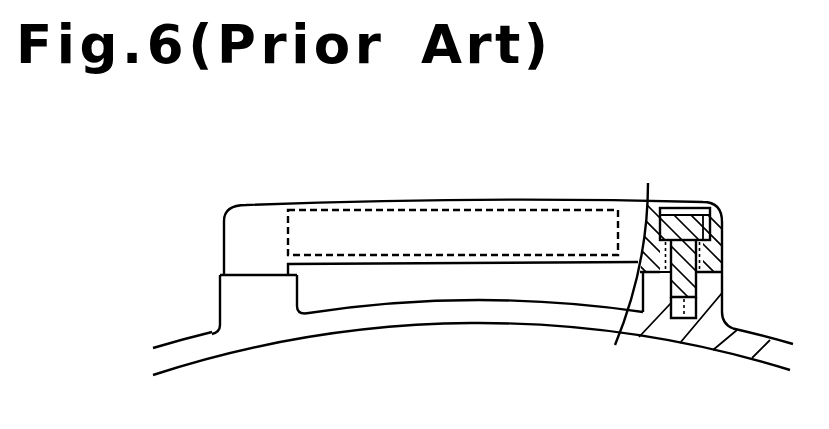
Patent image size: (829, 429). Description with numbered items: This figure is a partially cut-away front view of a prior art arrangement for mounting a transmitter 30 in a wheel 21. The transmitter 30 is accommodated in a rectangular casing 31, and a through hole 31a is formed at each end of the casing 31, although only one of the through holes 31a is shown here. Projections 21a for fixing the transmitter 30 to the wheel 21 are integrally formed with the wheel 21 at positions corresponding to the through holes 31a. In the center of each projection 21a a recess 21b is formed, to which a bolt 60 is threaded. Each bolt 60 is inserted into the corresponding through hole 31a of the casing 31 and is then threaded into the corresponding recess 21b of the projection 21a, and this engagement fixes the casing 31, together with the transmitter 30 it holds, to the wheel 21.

The transmitter 30 is at (400, 210).
The casing 31 is at (517, 200).
The through hole 31a is at (678, 202).
The bolt 60 is at (701, 208).
The wheel 21 is at (737, 354).
The projection 21a is at (714, 281).
The recess 21b is at (714, 313).